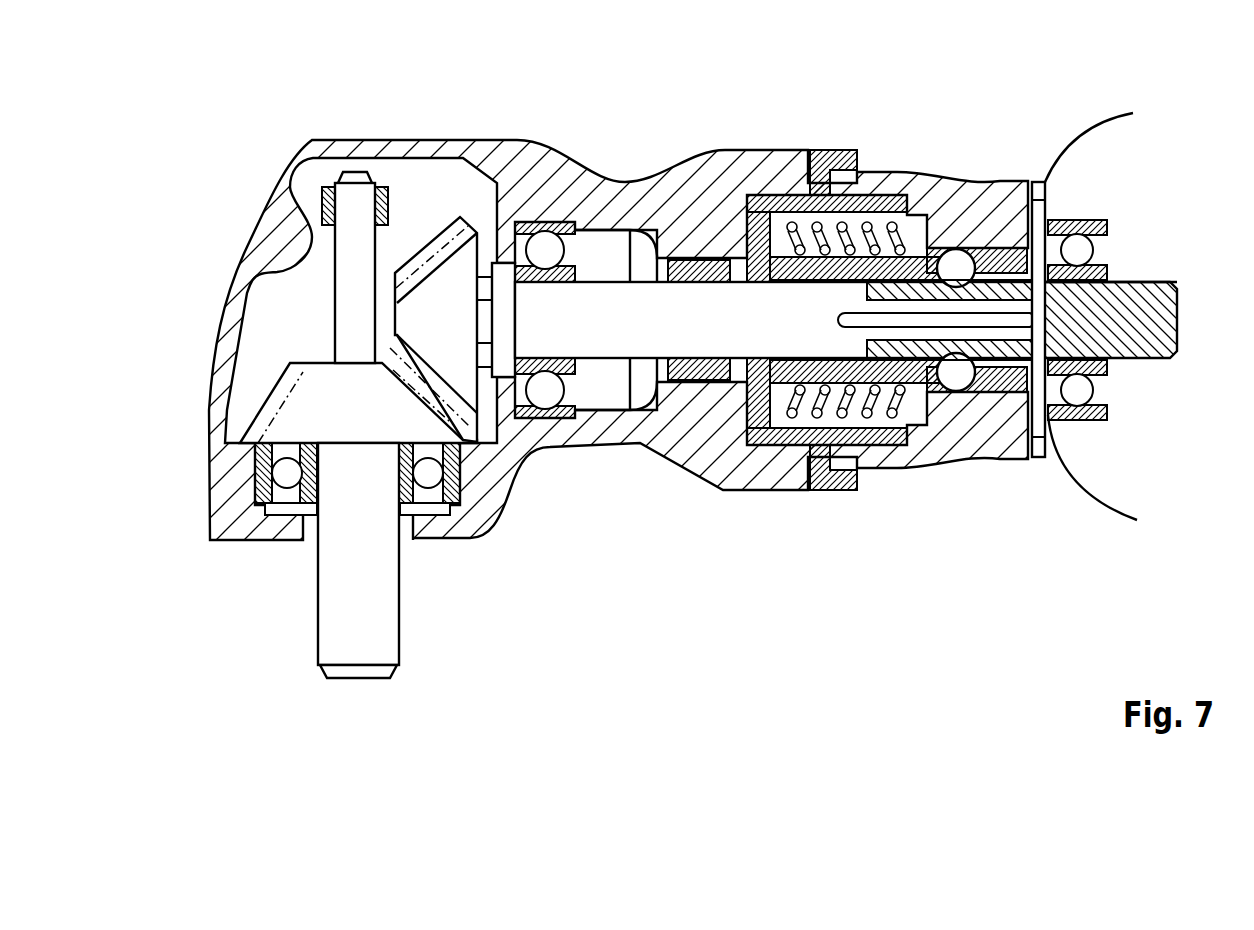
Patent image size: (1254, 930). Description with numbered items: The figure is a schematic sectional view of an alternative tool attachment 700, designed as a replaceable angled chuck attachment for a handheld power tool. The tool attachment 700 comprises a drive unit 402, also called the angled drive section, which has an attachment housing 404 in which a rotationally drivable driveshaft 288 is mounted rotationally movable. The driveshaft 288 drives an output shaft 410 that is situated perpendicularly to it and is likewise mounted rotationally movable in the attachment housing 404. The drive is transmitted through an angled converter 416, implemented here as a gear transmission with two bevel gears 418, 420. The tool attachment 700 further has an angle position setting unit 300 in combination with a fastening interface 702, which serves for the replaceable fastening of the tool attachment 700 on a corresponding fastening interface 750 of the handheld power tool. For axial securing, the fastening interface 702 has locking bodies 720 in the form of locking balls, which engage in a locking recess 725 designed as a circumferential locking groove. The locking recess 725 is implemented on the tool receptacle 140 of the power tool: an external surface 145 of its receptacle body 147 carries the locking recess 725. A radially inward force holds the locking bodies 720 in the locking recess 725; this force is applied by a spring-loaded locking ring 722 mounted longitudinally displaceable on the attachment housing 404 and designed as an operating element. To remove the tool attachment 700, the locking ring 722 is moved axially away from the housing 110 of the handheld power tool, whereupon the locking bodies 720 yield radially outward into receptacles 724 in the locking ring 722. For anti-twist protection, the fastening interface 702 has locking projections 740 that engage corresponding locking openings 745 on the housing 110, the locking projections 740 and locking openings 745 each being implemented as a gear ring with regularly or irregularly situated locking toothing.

The tool attachment 700 is at (671, 346).
The drive unit 402 is at (618, 296).
The attachment housing 404 is at (675, 190).
The converter 416 is at (484, 486).
The bevel gear 418 is at (438, 290).
The bevel gear 420 is at (300, 414).
The output shaft 410 is at (333, 617).
The driveshaft 288 is at (597, 305).
The fastening interface 702 is at (887, 291).
The locking ring 722 is at (923, 195).
The receptacles 724 is at (1006, 238).
The locking bodies 720 is at (947, 380).
The locking recess 725 is at (958, 392).
The angle position setting unit 300 is at (797, 472).
The receptacle body 147 is at (1148, 320).
The external surface 145 is at (1148, 285).
The locking openings 745 is at (1041, 188).
The locking projections 740 is at (1046, 228).
The tool receptacle 140 is at (1040, 370).
The fastening interface 750 is at (1031, 478).
The housing 110 is at (1118, 500).